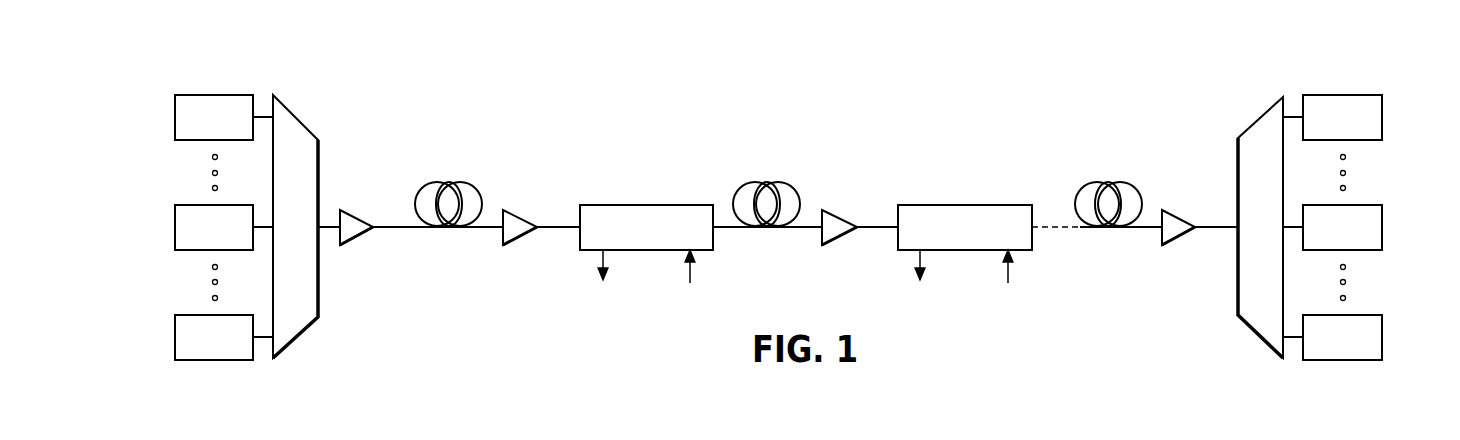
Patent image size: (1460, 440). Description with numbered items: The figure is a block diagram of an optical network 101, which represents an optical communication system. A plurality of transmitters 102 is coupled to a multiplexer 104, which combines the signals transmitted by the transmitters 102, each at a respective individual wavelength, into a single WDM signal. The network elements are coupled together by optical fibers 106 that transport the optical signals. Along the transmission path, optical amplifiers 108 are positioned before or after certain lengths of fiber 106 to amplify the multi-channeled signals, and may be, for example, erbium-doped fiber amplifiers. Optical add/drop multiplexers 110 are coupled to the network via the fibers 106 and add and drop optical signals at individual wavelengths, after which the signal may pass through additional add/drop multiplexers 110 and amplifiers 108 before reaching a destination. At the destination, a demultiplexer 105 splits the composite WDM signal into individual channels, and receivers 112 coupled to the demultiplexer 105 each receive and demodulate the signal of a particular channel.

The optical network 101 is at (549, 59).
The transmitters 102 is at (175, 104).
The multiplexer 104 is at (297, 119).
The demultiplexer 105 is at (1262, 115).
The optical fibers 106 is at (448, 182).
The optical amplifiers 108 is at (360, 220).
The optical add/drop multiplexers 110 is at (648, 205).
The receivers 112 is at (1383, 105).